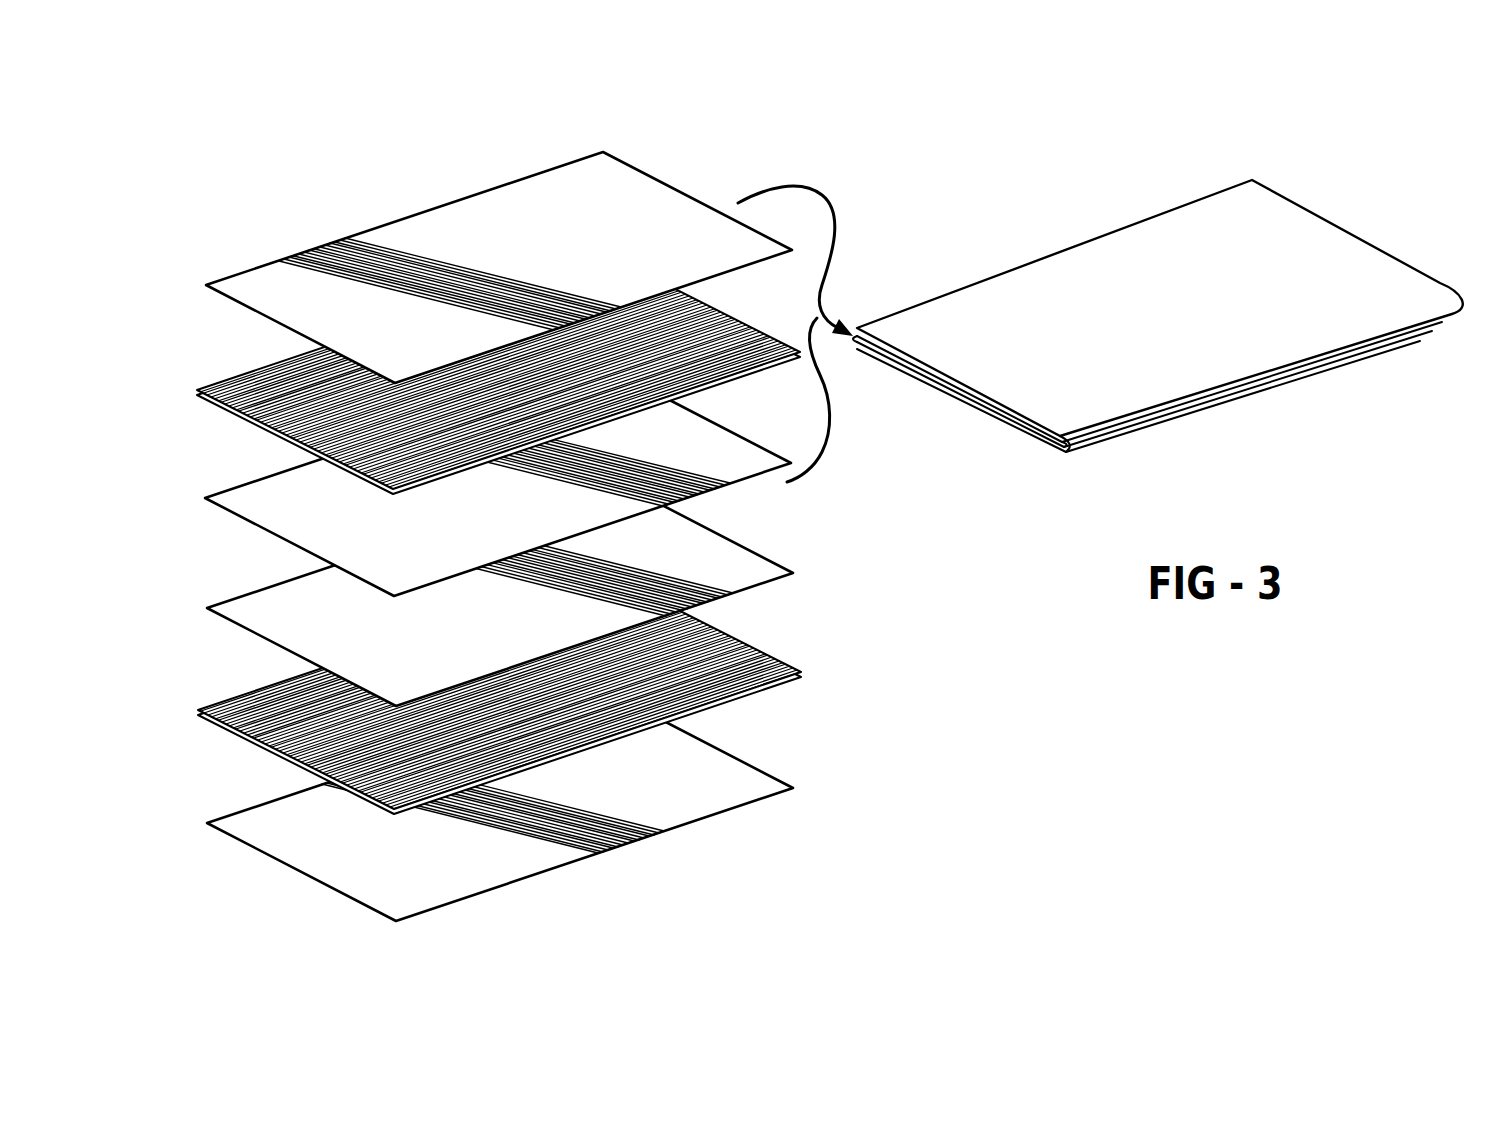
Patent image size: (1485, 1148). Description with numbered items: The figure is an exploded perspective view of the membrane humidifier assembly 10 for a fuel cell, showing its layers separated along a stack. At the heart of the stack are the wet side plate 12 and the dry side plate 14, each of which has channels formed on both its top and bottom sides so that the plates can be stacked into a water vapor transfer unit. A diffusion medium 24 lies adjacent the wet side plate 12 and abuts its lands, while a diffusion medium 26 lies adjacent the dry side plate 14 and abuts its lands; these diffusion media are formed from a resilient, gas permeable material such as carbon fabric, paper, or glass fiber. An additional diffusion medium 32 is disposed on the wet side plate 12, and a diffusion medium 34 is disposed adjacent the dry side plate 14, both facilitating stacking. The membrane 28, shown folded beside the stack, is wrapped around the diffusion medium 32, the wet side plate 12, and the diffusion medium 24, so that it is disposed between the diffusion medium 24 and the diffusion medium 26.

The membrane humidifier assembly 10 is at (471, 536).
The wet side plate 12 is at (280, 440).
The dry side plate 14 is at (280, 761).
The diffusion medium 24 is at (487, 510).
The diffusion medium 26 is at (487, 630).
The membrane 28 is at (1143, 315).
The additional diffusion medium 32 is at (487, 253).
The diffusion medium 34 is at (487, 865).